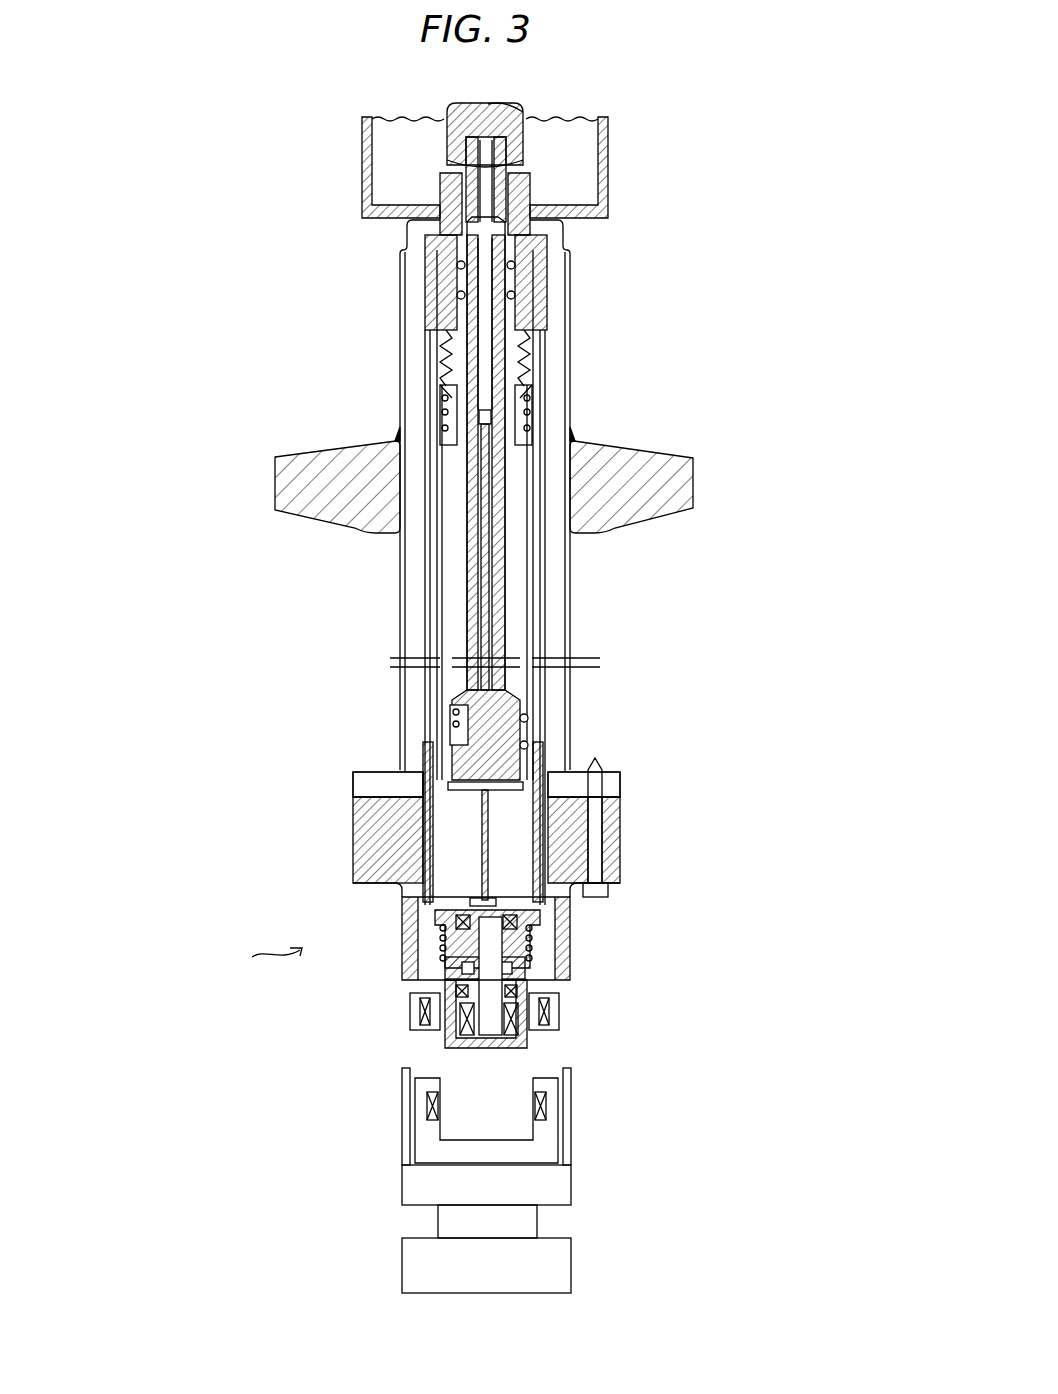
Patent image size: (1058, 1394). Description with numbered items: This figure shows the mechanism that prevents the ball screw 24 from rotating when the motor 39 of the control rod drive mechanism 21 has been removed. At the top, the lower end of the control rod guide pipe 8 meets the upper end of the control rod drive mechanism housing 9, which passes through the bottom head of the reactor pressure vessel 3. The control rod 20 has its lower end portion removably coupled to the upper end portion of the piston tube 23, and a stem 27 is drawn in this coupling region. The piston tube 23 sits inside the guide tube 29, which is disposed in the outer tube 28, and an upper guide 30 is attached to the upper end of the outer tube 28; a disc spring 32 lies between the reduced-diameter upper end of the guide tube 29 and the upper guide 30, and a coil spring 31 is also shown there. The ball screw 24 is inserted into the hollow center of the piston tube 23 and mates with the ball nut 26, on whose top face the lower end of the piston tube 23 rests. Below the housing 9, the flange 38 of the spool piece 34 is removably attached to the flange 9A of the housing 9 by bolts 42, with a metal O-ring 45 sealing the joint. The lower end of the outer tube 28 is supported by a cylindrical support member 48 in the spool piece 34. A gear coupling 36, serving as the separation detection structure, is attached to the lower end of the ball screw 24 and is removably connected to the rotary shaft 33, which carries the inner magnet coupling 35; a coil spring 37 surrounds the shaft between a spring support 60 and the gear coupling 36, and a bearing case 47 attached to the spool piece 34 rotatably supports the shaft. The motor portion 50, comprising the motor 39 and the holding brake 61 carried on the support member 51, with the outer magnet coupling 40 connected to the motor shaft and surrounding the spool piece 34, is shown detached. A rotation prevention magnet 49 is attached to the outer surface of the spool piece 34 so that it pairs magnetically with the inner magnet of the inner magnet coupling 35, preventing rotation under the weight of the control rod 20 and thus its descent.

The reactor pressure vessel 3 is at (670, 507).
The control rod guide pipe 8 is at (362, 155).
The control rod drive mechanism housing 9 is at (560, 612).
The flange 9A is at (612, 783).
The control rod 20 is at (508, 126).
The control rod drive mechanism 21 is at (262, 956).
The piston tube 23 is at (473, 595).
The ball screw 24 is at (487, 838).
The ball nut 26 is at (497, 752).
The stem 27 is at (498, 184).
The outer tube 28 is at (543, 365).
The guide tube 29 is at (437, 625).
The upper guide 30 is at (433, 277).
The coil spring 31 is at (530, 411).
The disc spring 32 is at (525, 345).
The rotary shaft 33 is at (487, 1005).
The spool piece 34 is at (562, 945).
The inner magnet coupling 35 is at (455, 1036).
The gear coupling 36 is at (525, 913).
The coil spring 37 is at (530, 947).
The flange 38 is at (612, 863).
The motor 39 is at (408, 1262).
The outer magnet coupling 40 is at (423, 1128).
The bolt 42 is at (595, 892).
The O-ring 45 is at (415, 795).
The bearing case 47 is at (455, 978).
The cylindrical support member 48 is at (428, 925).
The rotation prevention magnet 49 is at (418, 1008).
The motor portion 50 is at (495, 1181).
The support member 51 is at (405, 1105).
The spring support 60 is at (440, 957).
The holding brake 61 is at (408, 1183).